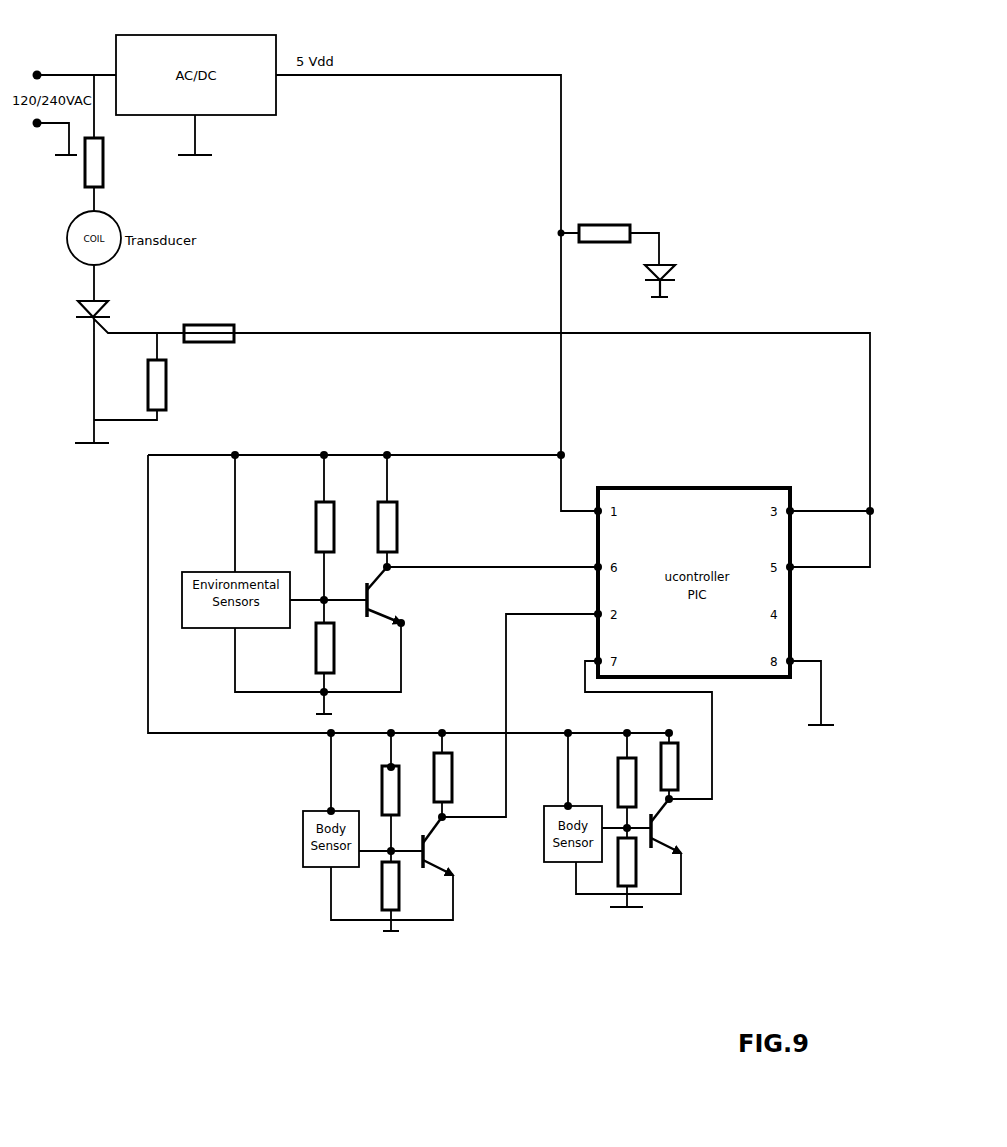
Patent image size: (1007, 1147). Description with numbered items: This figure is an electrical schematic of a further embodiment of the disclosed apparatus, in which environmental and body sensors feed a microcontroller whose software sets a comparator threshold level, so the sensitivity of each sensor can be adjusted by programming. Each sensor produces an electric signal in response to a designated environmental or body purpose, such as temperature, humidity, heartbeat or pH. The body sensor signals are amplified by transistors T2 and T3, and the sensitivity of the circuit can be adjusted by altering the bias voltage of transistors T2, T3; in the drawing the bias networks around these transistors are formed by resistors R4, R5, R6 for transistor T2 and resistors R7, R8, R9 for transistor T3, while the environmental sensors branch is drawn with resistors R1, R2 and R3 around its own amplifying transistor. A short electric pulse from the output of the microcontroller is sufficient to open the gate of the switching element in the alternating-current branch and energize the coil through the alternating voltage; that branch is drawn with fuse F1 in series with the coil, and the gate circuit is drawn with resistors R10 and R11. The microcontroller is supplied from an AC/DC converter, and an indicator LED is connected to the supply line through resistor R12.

The fuse F1 is at (105, 162).
The transistor T2 is at (677, 826).
The transistor T3 is at (444, 846).
The resistor R1 is at (313, 527).
The resistor R2 is at (314, 648).
The resistor R3 is at (376, 527).
The resistor R4 is at (680, 766).
The resistor R5 is at (616, 782).
The resistor R6 is at (616, 864).
The resistor R7 is at (455, 777).
The resistor R8 is at (378, 790).
The resistor R9 is at (404, 886).
The resistor R10 is at (209, 323).
The resistor R11 is at (171, 385).
The resistor R12 is at (604, 224).
The light emitting diode LED is at (644, 281).